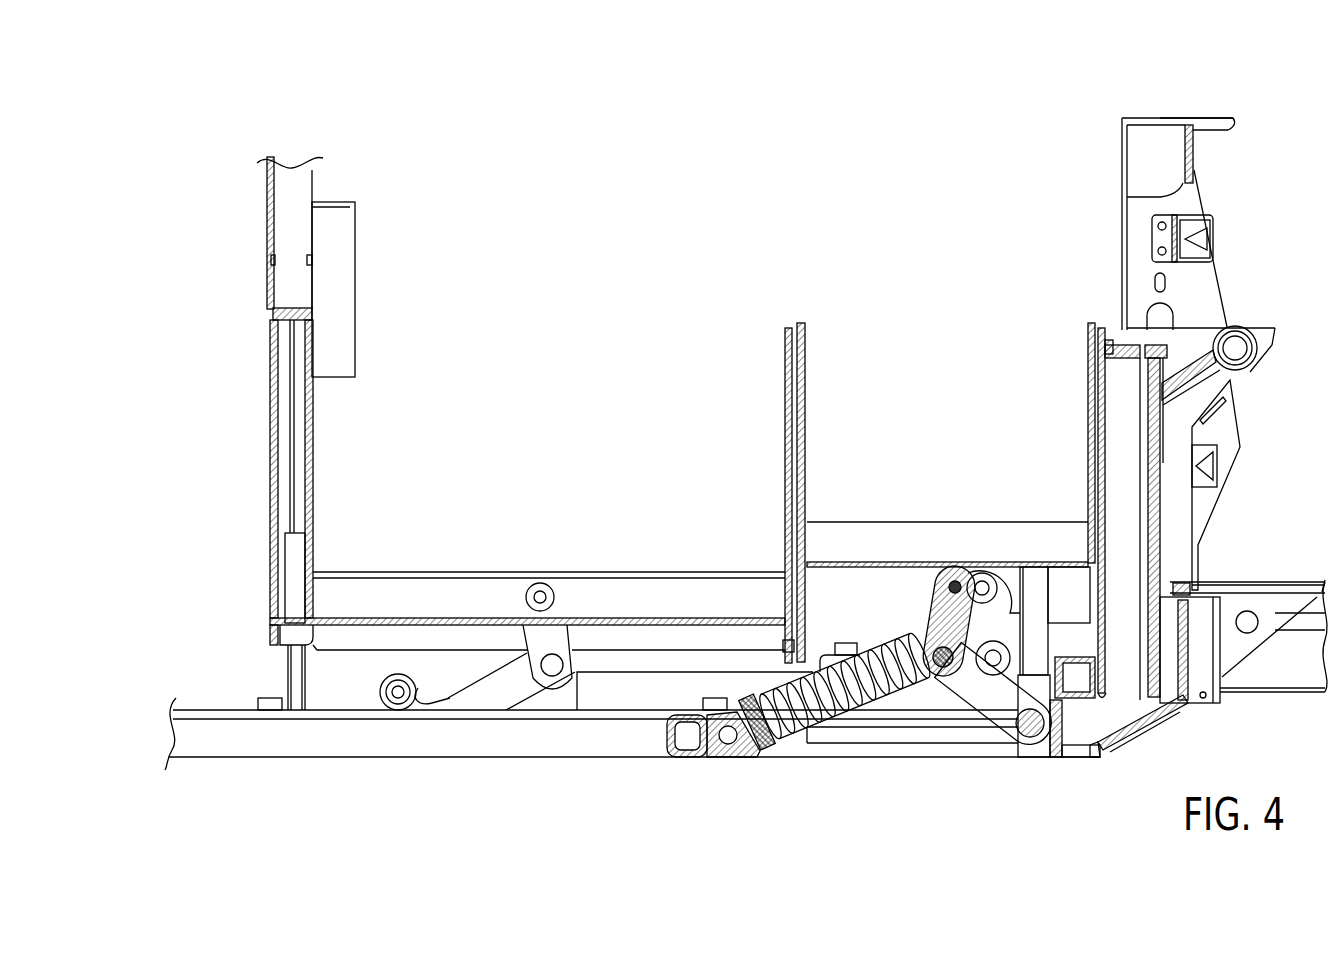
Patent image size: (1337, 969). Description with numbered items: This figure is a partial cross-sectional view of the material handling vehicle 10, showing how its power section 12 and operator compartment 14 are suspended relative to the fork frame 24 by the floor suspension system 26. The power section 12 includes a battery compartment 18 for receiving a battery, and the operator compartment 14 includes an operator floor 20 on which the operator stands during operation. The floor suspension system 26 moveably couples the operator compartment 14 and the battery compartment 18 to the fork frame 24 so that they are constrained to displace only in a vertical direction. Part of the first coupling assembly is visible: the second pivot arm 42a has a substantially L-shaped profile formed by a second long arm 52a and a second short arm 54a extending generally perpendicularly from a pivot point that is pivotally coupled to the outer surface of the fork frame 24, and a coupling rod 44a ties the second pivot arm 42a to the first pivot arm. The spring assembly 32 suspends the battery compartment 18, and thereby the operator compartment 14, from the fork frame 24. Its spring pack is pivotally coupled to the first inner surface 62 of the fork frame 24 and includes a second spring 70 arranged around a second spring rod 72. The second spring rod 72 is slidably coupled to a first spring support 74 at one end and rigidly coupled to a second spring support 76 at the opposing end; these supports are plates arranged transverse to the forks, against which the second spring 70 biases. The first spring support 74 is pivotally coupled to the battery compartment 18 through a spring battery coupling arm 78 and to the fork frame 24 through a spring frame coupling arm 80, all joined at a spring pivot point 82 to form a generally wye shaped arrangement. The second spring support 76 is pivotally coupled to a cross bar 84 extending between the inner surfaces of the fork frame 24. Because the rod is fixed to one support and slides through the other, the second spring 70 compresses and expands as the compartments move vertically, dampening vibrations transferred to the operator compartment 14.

The material handling vehicle 10 is at (810, 103).
The power section 12 is at (1045, 150).
The operator compartment 14 is at (578, 545).
The battery compartment 18 is at (958, 501).
The operator floor 20 is at (516, 573).
The fork frame 24 is at (940, 765).
The floor suspension system 26 is at (746, 773).
The spring assembly 32 is at (878, 611).
The second pivot arm 42a is at (470, 700).
The coupling rod 44a is at (443, 685).
The second long arm 52a is at (498, 695).
The second short arm 54a is at (415, 708).
The first inner surface 62 is at (625, 740).
The second spring 70 is at (853, 705).
The second spring rod 72 is at (872, 650).
The first spring support 74 is at (925, 640).
The second spring support 76 is at (764, 746).
The spring battery coupling arm 78 is at (1000, 605).
The spring frame coupling arm 80 is at (995, 700).
The spring pivot point 82 is at (950, 660).
The cross bar 84 is at (708, 758).